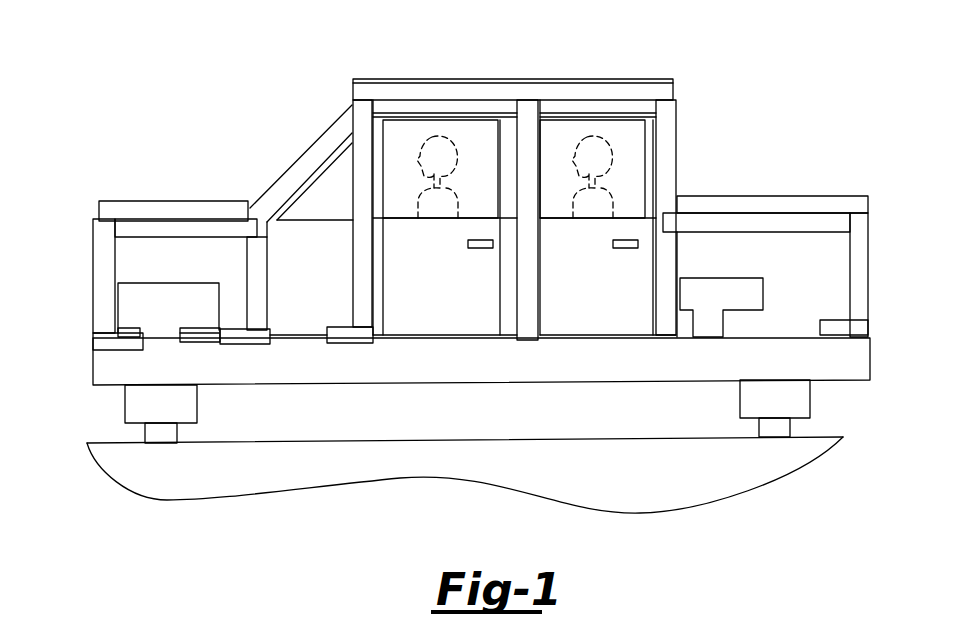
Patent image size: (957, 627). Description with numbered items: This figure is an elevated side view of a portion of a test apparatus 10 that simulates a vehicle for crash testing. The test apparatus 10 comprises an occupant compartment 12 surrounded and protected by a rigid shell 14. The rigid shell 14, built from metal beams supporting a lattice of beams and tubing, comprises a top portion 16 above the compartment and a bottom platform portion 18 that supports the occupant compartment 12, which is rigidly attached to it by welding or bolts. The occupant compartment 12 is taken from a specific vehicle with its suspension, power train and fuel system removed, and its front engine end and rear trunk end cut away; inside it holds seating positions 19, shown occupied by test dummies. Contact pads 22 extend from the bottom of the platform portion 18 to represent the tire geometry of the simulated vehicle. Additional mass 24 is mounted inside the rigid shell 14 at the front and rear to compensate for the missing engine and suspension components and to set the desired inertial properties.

The test apparatus 10 is at (280, 58).
The occupant compartment 12 is at (448, 271).
The rigid shell 14 is at (684, 66).
The top portion 16 is at (352, 87).
The platform portion 18 is at (260, 363).
The seating positions 19 is at (580, 303).
The contact pads 22 is at (147, 408).
The additional mass 24 is at (152, 302).